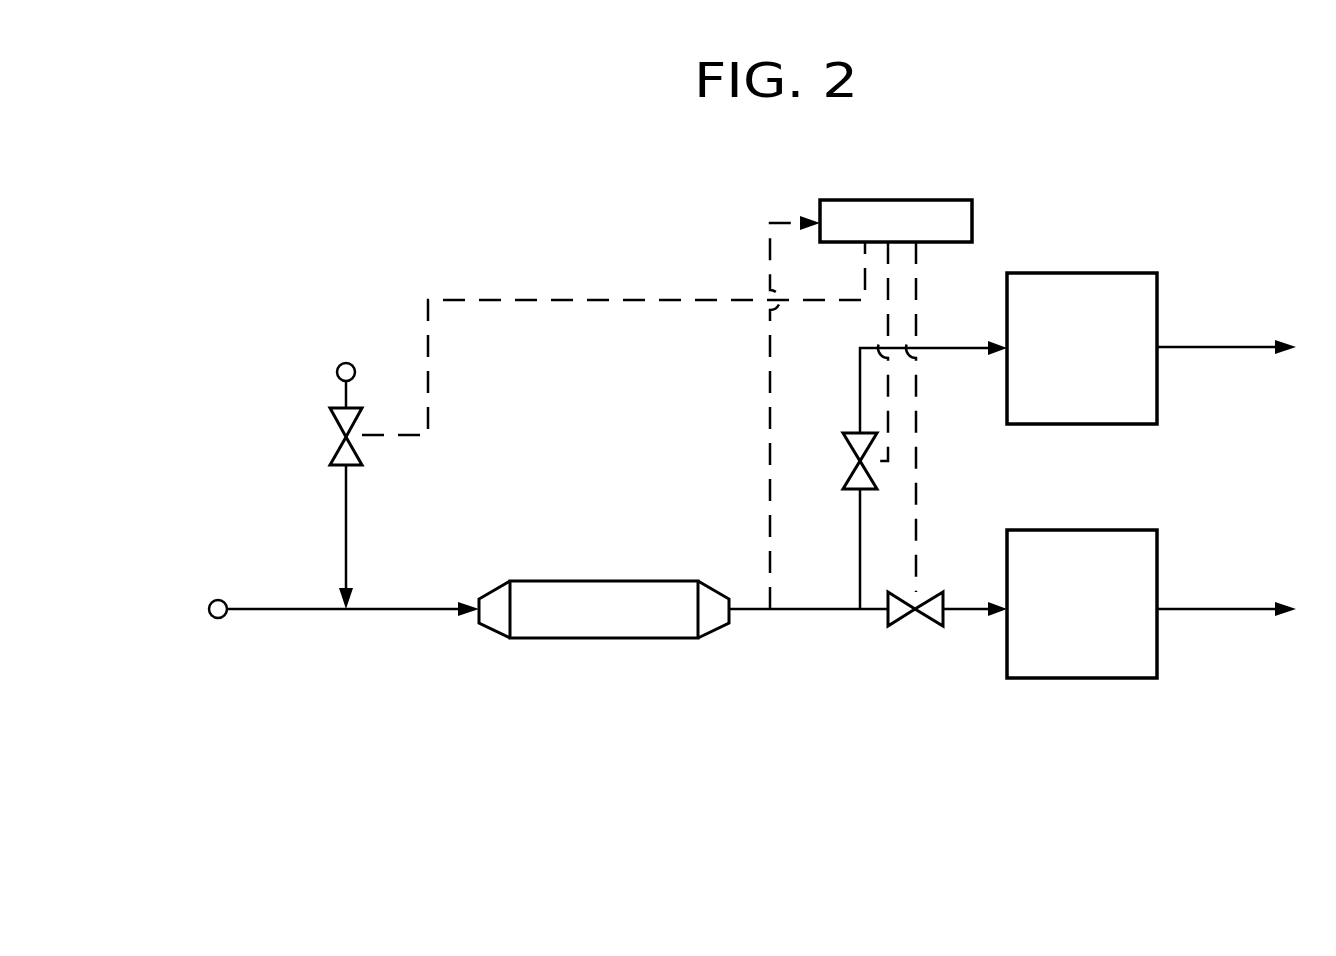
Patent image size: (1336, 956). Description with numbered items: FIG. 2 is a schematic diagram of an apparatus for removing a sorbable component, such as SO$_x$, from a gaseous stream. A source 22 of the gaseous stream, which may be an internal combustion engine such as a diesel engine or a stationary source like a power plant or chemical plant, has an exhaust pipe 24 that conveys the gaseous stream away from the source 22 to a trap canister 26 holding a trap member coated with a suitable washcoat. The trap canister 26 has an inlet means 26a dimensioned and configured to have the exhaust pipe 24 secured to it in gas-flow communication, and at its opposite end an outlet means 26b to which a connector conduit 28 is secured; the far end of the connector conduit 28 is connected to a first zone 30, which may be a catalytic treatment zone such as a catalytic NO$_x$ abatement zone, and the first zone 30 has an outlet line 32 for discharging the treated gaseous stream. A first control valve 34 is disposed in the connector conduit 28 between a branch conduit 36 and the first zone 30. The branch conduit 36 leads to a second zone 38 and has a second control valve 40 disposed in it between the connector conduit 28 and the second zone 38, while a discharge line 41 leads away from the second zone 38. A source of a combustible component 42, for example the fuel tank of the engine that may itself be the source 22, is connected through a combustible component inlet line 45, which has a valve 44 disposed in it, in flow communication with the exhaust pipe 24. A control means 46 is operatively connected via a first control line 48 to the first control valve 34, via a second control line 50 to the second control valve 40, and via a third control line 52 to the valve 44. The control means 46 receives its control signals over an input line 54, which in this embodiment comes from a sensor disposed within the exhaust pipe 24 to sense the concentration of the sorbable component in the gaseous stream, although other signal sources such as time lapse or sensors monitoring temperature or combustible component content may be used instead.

The source 22 is at (225, 600).
The exhaust pipe 24 is at (385, 611).
The trap canister 26 is at (645, 639).
The inlet means 26a is at (498, 600).
The outlet means 26b is at (713, 598).
The connector conduit 28 is at (808, 610).
The first zone 30 is at (1110, 679).
The outlet line 32 is at (1236, 610).
The first control valve 34 is at (930, 626).
The branch conduit 36 is at (859, 385).
The second zone 38 is at (1110, 425).
The second control valve 40 is at (850, 452).
The discharge line 41 is at (1226, 348).
The source of a combustible component 42 is at (338, 368).
The valve 44 is at (338, 437).
The combustible component inlet line 45 is at (345, 527).
The control means 46 is at (905, 200).
The first control line 48 is at (918, 318).
The second control line 50 is at (885, 305).
The third control line 52 is at (657, 298).
The input line 54 is at (768, 435).